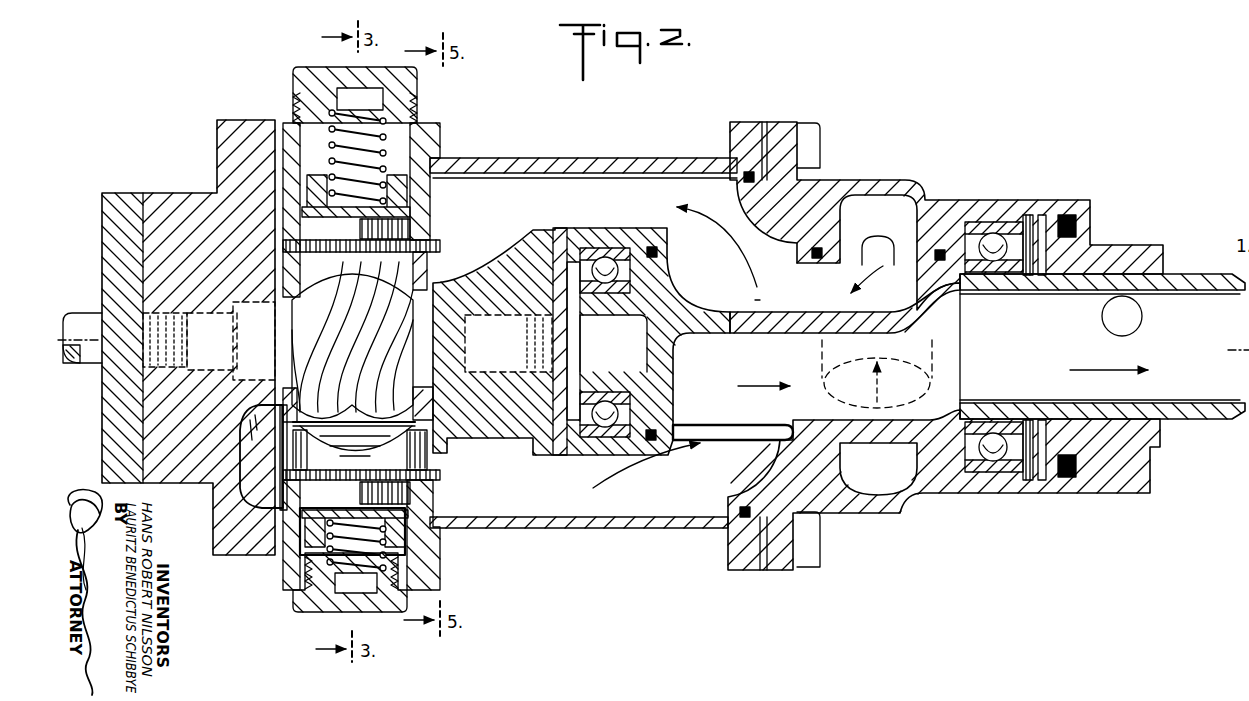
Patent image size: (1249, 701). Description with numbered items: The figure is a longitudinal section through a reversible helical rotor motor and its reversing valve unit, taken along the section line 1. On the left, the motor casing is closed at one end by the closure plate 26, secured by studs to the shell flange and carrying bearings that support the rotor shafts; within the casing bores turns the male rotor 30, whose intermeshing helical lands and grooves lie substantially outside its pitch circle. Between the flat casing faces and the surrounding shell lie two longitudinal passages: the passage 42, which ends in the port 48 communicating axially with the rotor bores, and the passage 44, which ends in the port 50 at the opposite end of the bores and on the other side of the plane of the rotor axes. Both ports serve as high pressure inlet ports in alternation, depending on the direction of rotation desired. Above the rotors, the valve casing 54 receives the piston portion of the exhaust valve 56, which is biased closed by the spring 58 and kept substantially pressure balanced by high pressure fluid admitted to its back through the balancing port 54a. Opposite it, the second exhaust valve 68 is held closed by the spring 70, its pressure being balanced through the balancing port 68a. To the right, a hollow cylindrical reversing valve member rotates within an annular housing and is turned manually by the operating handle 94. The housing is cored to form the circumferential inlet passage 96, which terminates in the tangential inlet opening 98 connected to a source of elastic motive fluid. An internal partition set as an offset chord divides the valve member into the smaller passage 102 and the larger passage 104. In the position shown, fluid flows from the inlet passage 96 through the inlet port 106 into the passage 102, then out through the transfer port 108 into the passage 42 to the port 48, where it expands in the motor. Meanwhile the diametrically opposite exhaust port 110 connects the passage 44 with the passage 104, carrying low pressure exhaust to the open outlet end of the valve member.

The section line 1 is at (80, 333).
The closure plate 26 is at (210, 480).
The rotor 30 is at (365, 287).
The passage 42 is at (462, 262).
The passage 44 is at (538, 494).
The port 48 is at (468, 276).
The port 50 is at (265, 459).
The valve casing 54 is at (418, 100).
The balancing port 54a is at (420, 163).
The exhaust valve 56 is at (412, 193).
The spring 58 is at (292, 125).
The second exhaust valve 68 is at (400, 492).
The balancing port 68a is at (298, 512).
The spring 70 is at (412, 561).
The operating handle 94 is at (1115, 322).
The inlet passage 96 is at (905, 197).
The inlet opening 98 is at (897, 362).
The passage 102 is at (803, 301).
The passage 104 is at (775, 370).
The inlet port 106 is at (880, 268).
The transfer port 108 is at (706, 278).
The exhaust port 110 is at (770, 412).